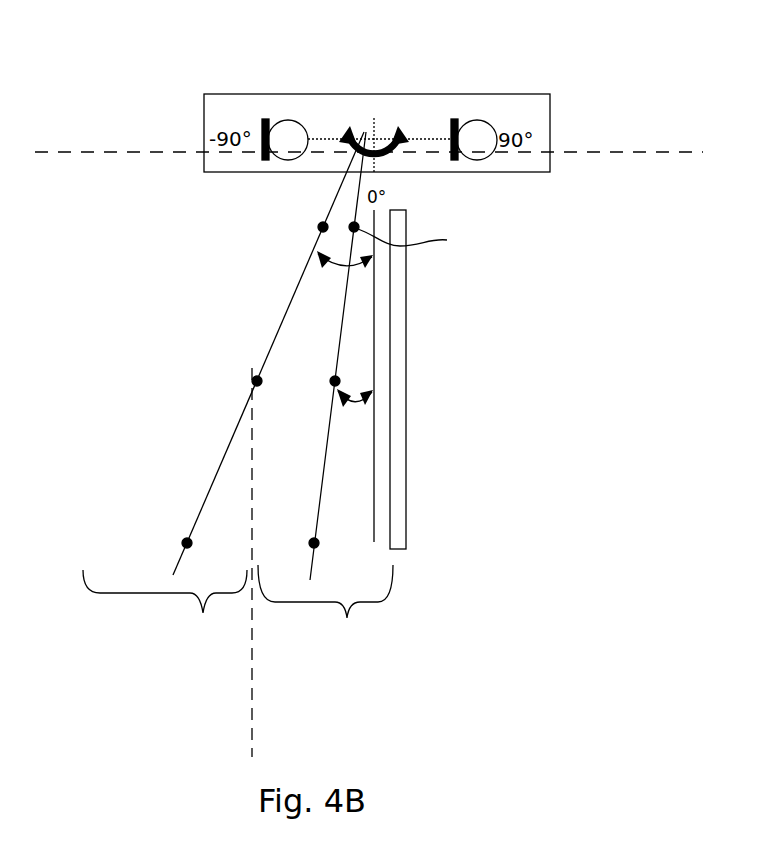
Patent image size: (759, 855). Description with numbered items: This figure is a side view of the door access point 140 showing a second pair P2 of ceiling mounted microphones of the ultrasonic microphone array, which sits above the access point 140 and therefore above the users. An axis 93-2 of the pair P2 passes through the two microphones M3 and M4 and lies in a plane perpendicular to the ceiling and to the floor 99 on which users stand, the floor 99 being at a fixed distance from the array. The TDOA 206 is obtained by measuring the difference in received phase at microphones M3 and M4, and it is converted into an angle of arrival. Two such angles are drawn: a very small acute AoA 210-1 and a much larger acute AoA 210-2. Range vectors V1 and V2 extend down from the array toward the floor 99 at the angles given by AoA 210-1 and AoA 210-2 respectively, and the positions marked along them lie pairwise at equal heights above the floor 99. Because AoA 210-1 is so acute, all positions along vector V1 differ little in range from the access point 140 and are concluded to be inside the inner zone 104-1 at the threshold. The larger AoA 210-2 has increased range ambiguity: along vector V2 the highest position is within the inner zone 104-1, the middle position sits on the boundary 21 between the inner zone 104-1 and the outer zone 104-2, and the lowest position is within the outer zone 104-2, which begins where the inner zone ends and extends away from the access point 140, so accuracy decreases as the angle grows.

The axis 93-2 is at (668, 152).
The pair of ceiling mounted microphones P2 is at (204, 135).
The microphone M3 is at (285, 128).
The microphone M4 is at (474, 127).
The TDOA 206 is at (316, 142).
The door access point 140 is at (406, 380).
The range vector V2 is at (227, 447).
The range vector V1 is at (320, 500).
The AoA 210-2 is at (334, 270).
The AoA 210-1 is at (353, 408).
The boundary 21 is at (258, 697).
The outer zone 104-2 is at (165, 612).
The inner zone 104-1 is at (325, 612).
The floor 99 is at (448, 594).